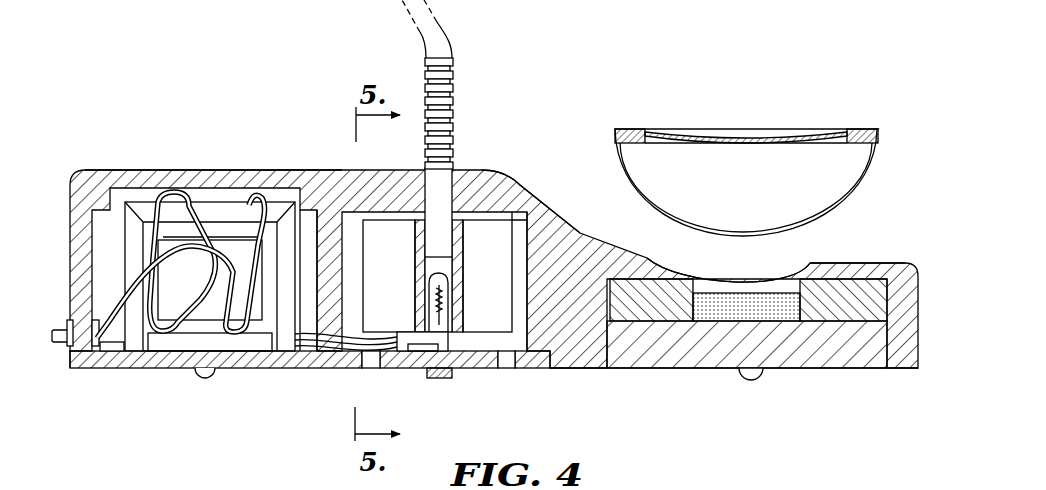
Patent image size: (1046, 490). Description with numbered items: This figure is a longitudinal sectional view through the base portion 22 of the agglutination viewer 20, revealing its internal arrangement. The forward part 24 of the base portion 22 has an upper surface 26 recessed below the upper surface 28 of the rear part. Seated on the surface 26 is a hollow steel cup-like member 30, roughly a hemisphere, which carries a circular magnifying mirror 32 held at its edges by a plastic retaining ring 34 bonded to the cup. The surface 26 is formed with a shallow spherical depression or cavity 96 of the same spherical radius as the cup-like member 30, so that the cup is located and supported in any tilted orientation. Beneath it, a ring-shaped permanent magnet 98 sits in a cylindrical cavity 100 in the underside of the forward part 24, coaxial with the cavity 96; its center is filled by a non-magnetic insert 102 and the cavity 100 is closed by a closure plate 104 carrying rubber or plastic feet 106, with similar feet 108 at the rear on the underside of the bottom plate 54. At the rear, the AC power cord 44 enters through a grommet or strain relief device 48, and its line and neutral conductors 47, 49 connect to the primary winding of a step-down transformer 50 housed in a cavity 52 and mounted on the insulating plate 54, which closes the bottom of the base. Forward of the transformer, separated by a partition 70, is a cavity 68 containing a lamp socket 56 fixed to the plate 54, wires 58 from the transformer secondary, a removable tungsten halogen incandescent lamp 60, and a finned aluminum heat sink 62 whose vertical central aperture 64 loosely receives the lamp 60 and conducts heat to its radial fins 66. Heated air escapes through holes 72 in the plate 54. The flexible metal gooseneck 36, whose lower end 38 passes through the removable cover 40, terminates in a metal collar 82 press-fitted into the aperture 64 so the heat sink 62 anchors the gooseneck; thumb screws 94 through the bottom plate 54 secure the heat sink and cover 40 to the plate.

The agglutination viewer 20 is at (170, 98).
The base portion 22 is at (67, 230).
The forward part 24 is at (902, 370).
The upper surface 26 is at (862, 263).
The upper surface 28 is at (152, 170).
The cup-like member 30 is at (862, 177).
The magnifying mirror 32 is at (708, 131).
The retaining ring 34 is at (838, 130).
The gooseneck 36 is at (452, 30).
The lower end 38 is at (453, 134).
The cover 40 is at (508, 180).
The AC power cord 44 is at (62, 324).
The line conductor 47 is at (120, 352).
The grommet or strain relief device 48 is at (63, 354).
The neutral conductor 49 is at (106, 236).
The step-down transformer 50 is at (212, 215).
The cavity 52 is at (310, 215).
The insulating board or plate 54 is at (241, 370).
The lamp socket 56 is at (448, 342).
The wires 58 is at (346, 352).
The incandescent lamp 60 is at (447, 297).
The heat sink 62 is at (524, 238).
The central aperture 64 is at (448, 266).
The radial fins 66 is at (350, 222).
The cavity 68 is at (520, 300).
The partition 70 is at (335, 275).
The holes 72 is at (372, 369).
The metal collar 82 is at (424, 182).
The thumb screws 94 is at (438, 380).
The spherical depression or cavity 96 is at (713, 272).
The ring-shaped permanent magnet 98 is at (647, 315).
The cylindrical cavity 100 is at (889, 283).
The non-magnetic insert 102 is at (788, 318).
The closure plate 104 is at (701, 368).
The feet 106 is at (755, 382).
The feet 108 is at (200, 380).